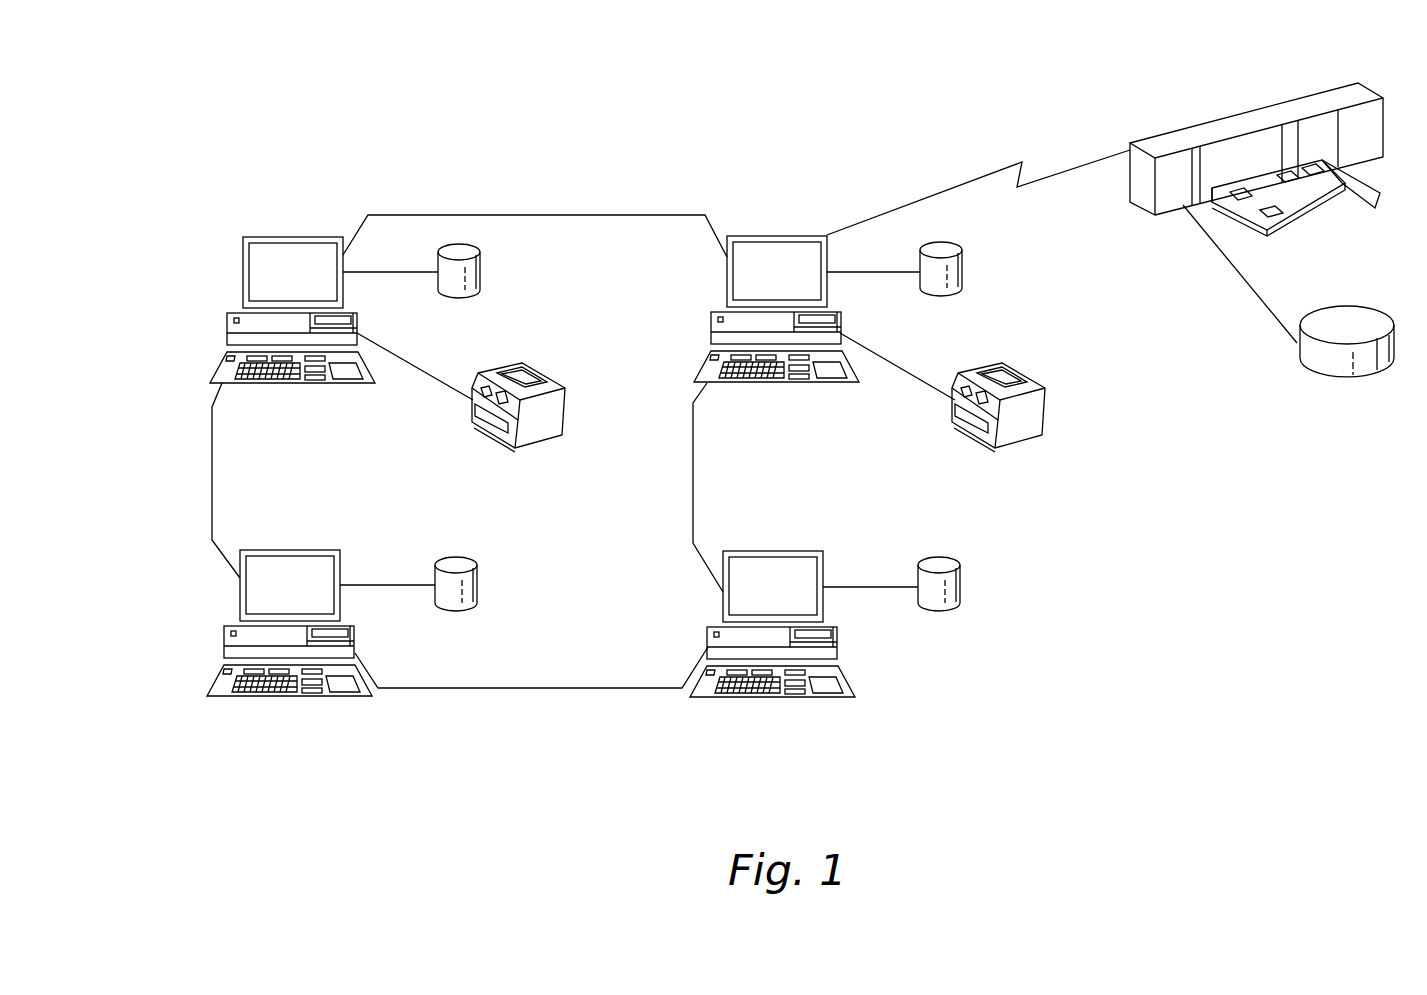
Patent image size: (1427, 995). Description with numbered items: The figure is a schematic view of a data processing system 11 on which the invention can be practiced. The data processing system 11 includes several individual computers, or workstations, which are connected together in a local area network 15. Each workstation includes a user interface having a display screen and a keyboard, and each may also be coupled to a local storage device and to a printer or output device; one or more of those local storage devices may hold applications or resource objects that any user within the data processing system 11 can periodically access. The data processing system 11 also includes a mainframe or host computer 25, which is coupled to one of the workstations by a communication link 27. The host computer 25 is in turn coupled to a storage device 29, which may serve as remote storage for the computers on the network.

The data processing system 11 is at (477, 163).
The local area network 15 is at (557, 688).
The mainframe or host computer 25 is at (1223, 118).
The communication link 27 is at (1058, 173).
The storage device 29 is at (1337, 378).